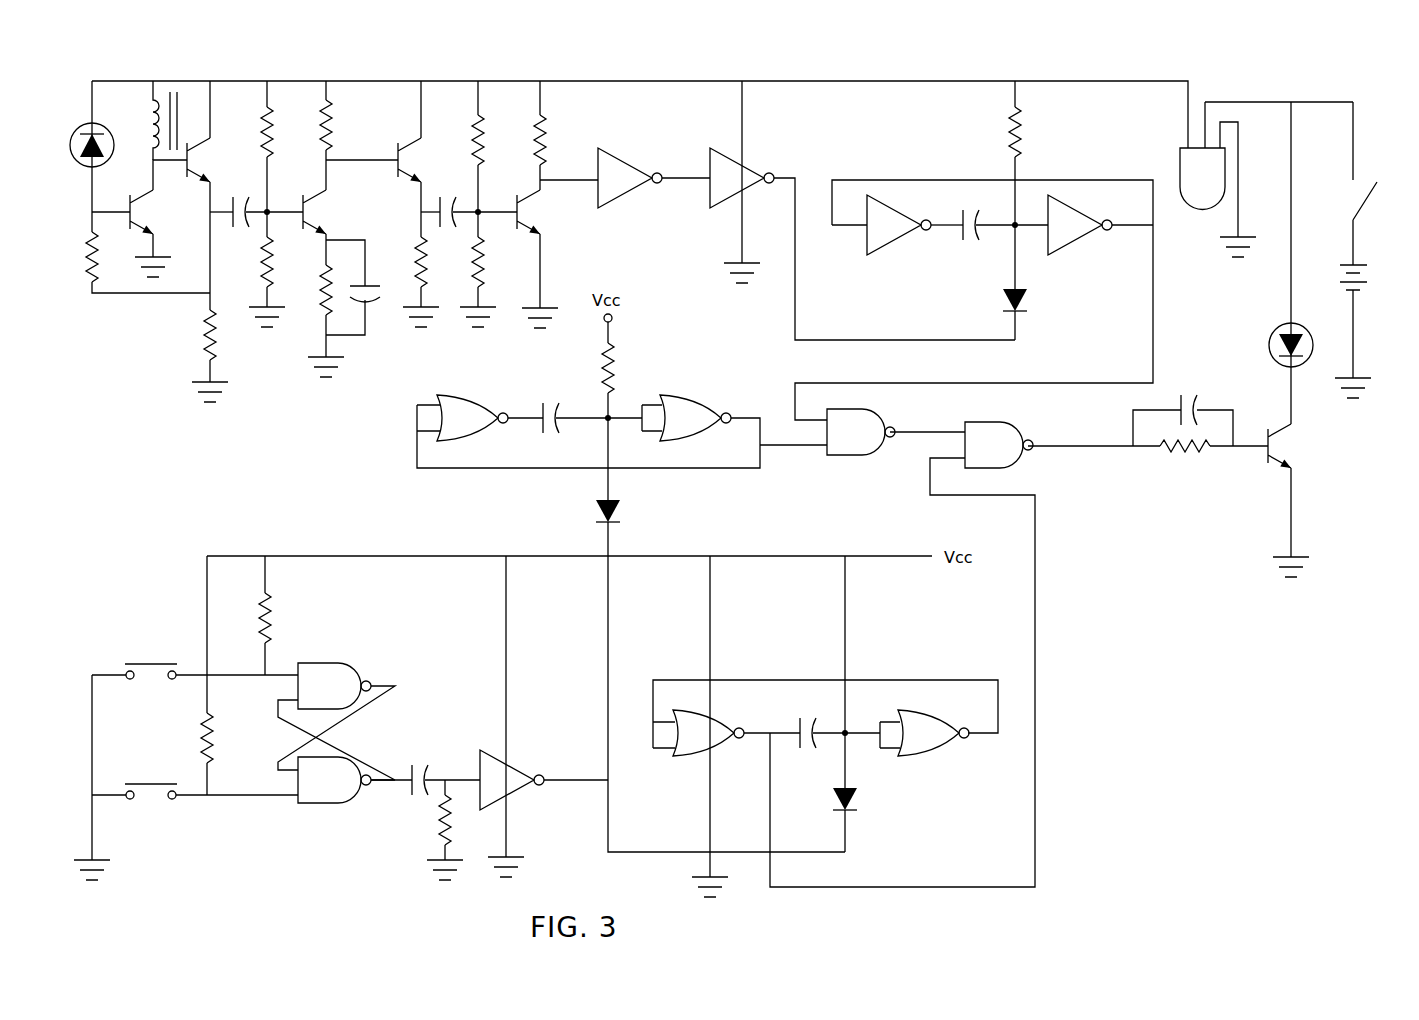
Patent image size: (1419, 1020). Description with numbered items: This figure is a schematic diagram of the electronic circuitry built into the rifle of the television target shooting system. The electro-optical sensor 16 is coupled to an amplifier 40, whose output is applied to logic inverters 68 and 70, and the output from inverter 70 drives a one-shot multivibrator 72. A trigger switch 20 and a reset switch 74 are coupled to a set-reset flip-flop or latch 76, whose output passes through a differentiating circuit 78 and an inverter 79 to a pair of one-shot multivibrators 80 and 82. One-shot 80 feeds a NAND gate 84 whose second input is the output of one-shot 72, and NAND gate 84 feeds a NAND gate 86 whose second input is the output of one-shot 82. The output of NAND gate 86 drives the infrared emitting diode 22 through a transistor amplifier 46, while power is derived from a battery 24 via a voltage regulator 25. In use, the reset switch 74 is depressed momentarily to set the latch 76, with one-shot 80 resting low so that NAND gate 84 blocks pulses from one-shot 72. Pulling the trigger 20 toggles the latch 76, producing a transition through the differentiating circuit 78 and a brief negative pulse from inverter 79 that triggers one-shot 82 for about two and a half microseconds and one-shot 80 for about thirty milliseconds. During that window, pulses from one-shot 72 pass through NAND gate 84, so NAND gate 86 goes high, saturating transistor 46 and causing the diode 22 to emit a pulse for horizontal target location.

The electro-optical sensor 16 is at (80, 165).
The trigger switch 20 is at (148, 799).
The infrared emitting diode 22 is at (1308, 329).
The battery 24 is at (1364, 285).
The voltage regulator 25 is at (1185, 193).
The amplifier 40 is at (309, 382).
The transistor amplifier 46 is at (1285, 447).
The logic inverter 68 is at (619, 208).
The logic inverter 70 is at (731, 200).
The one-shot multivibrator 72 is at (934, 275).
The reset switch 74 is at (150, 679).
The set-reset flip-flop (latch) 76 is at (284, 747).
The differentiating circuit 78 is at (428, 798).
The inverter 79 is at (491, 749).
The one-shot multivibrator 80 is at (539, 461).
The one-shot multivibrator 82 is at (771, 717).
The NAND gate 84 is at (852, 456).
The NAND gate 86 is at (1022, 460).